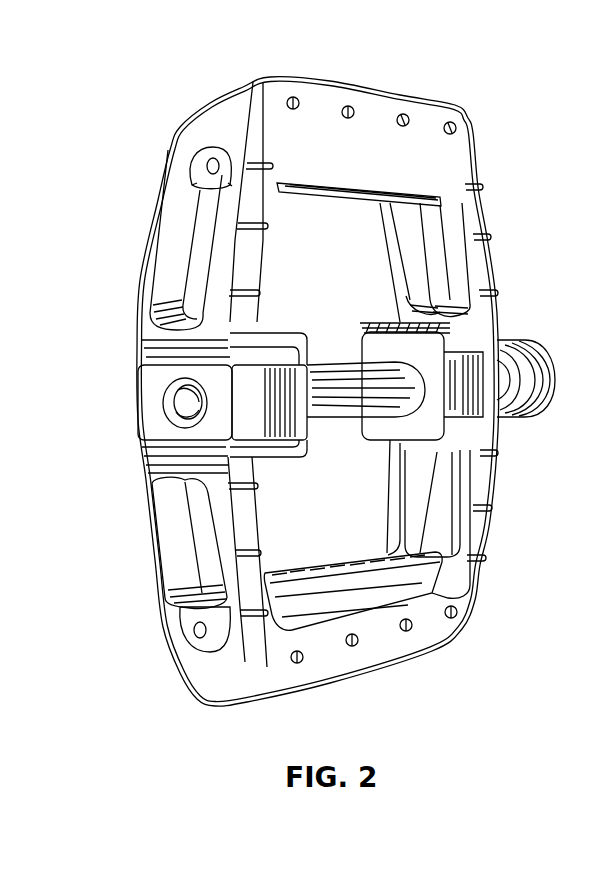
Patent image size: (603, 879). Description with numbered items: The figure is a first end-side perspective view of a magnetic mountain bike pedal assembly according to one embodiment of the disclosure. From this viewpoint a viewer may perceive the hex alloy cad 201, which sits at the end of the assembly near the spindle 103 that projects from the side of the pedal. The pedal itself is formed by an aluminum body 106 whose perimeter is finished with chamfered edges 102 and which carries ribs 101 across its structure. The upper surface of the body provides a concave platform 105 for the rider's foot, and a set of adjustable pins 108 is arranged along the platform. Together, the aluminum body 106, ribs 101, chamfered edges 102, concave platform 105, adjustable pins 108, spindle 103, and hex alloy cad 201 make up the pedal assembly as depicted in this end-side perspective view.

The ribs 101 is at (318, 391).
The chamfered edges 102 is at (162, 607).
The spindle 103 is at (533, 410).
The concave platform 105 is at (473, 527).
The aluminum body 106 is at (195, 133).
The adjustable pins 108 is at (413, 118).
The hex alloy cad 201 is at (178, 402).